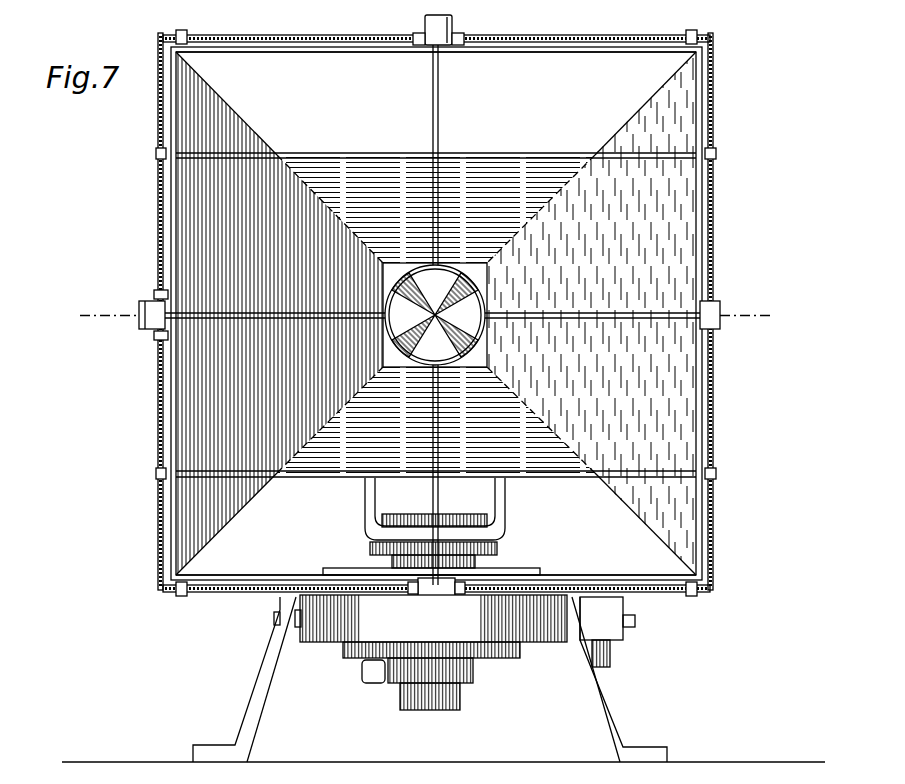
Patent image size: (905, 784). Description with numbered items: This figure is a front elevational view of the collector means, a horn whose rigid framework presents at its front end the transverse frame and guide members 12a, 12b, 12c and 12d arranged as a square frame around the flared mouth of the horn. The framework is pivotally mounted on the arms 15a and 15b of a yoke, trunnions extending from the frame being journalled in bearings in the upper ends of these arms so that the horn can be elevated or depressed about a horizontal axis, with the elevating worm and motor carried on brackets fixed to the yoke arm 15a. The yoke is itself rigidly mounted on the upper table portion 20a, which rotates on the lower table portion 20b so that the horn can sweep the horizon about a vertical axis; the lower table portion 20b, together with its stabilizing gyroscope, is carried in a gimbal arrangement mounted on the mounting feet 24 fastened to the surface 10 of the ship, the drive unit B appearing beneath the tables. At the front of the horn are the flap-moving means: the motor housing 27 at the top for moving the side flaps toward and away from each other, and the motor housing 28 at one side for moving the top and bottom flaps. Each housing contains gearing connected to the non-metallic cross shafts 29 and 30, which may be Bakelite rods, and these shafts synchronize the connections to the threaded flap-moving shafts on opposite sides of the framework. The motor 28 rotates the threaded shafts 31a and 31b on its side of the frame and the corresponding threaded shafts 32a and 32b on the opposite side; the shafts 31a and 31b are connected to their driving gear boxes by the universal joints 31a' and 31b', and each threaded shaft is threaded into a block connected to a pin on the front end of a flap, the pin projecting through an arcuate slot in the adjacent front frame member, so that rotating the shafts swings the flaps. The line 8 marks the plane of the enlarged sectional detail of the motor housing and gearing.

The section line 8— 8 is at (119, 290).
The surface 10 is at (500, 761).
The front transverse frame and guide member 12a is at (587, 52).
The front transverse frame and guide member 12b is at (172, 399).
The front transverse frame and guide member 12c is at (236, 578).
The front transverse frame and guide member 12d is at (700, 137).
The yoke arm 15a is at (366, 501).
The yoke arm 15b is at (496, 501).
The upper table portion 20a is at (498, 550).
The lower table portion 20b is at (505, 556).
The mounting feet 24 is at (243, 724).
The motor 27 is at (452, 25).
The motor 28 is at (140, 320).
The cross shaft 29 is at (439, 423).
The cross shaft 30 is at (549, 320).
The threaded shaft 31a is at (131, 174).
The universal joint 31a' is at (130, 267).
The threaded shaft 31b is at (127, 454).
The universal joint 31b' is at (130, 353).
The threaded shaft 32a is at (716, 250).
The threaded shaft 32b is at (716, 446).
The motor/drive unit B is at (335, 643).